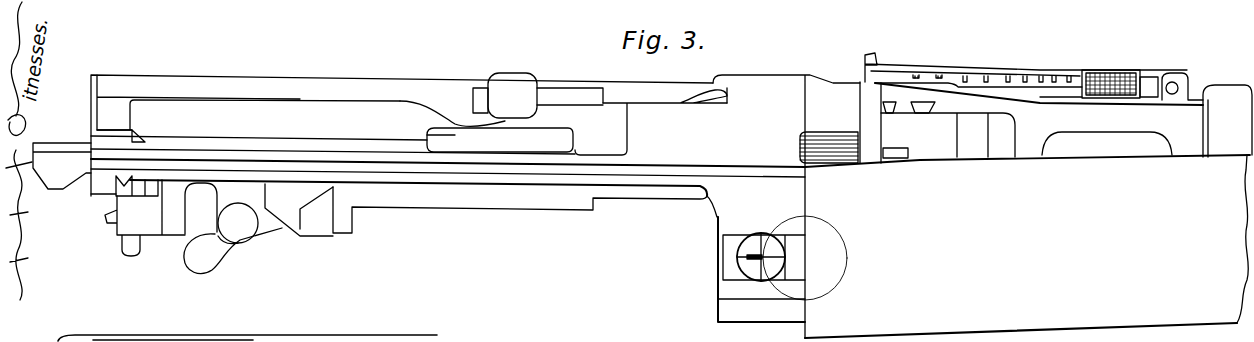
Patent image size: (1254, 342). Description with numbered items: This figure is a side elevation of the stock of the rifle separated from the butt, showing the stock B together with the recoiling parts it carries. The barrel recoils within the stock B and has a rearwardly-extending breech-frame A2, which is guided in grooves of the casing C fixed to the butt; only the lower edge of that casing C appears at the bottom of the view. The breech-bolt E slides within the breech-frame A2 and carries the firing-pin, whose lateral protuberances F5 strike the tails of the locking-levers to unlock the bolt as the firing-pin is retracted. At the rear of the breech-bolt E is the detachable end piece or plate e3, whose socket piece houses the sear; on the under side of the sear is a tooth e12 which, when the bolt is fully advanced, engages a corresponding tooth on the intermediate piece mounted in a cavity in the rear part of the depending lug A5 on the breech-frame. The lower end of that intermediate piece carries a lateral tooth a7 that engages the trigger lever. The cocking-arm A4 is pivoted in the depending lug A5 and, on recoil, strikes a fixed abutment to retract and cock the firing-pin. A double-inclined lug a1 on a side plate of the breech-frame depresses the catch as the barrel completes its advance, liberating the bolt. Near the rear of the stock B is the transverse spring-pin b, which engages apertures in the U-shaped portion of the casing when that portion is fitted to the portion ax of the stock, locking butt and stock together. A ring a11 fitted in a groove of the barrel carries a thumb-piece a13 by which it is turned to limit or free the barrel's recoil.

The breech-bolt E is at (448, 152).
The detachable end piece or plate e3 is at (107, 118).
The double-inclined lug a1 is at (62, 166).
The tooth e12 is at (135, 191).
The lateral tooth a7 is at (126, 249).
The cocking-arm A4 is at (228, 254).
The depending lug A5 is at (262, 208).
The lateral protuberances F5 is at (538, 95).
The breech-frame A2 is at (513, 155).
The ring a11 is at (851, 122).
The thumb-piece a13 is at (835, 145).
The transverse spring-pin b is at (767, 248).
The portion of the stock ax is at (750, 313).
The stock B is at (1027, 246).
The casing C is at (247, 335).